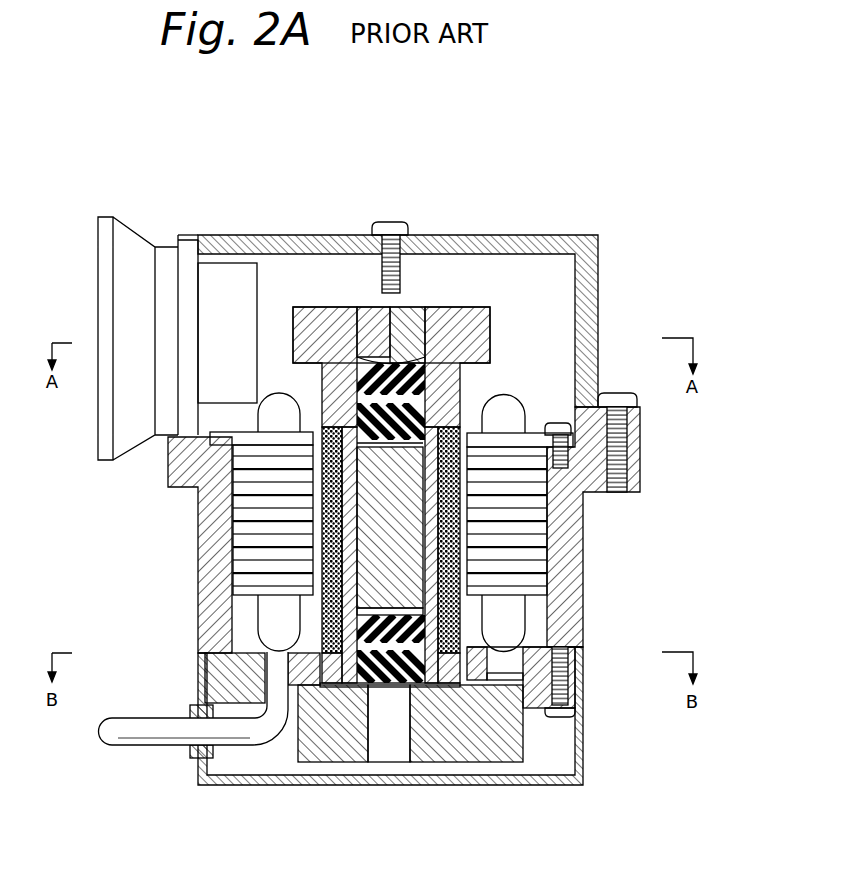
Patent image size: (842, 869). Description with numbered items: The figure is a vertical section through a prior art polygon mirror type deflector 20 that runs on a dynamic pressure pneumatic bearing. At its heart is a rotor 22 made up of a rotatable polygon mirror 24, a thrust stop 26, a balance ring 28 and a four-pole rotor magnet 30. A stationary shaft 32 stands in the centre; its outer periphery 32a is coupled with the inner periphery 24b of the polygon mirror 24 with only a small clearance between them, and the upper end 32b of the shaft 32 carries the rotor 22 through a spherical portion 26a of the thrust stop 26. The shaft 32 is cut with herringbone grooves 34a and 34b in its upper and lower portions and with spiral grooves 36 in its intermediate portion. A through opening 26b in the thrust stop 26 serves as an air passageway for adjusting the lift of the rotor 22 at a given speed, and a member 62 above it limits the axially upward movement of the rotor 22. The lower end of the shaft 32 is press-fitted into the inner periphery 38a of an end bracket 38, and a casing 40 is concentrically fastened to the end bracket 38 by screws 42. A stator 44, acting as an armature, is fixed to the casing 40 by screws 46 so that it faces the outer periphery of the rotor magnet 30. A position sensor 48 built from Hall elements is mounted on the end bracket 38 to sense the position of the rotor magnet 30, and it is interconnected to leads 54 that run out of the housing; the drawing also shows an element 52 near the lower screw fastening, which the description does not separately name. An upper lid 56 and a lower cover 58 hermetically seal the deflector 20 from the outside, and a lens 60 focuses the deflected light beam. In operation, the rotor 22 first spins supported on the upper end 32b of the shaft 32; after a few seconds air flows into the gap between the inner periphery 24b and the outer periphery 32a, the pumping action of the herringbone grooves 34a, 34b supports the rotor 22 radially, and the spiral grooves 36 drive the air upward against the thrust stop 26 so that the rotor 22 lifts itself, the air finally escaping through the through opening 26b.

The deflector 20 is at (361, 473).
The rotor 22 is at (495, 305).
The polygon mirror 24 is at (462, 307).
The inner periphery 24b is at (420, 408).
The thrust stop 26 is at (411, 307).
The spherical portion 26a is at (423, 360).
The through opening 26b is at (381, 307).
The balance ring 28 is at (467, 663).
The rotor magnet 30 is at (547, 620).
The stationary shaft 32 is at (417, 557).
The outer periphery 32a is at (417, 606).
The upper end 32b is at (352, 356).
The herringbone grooves 34a is at (320, 375).
The herringbone grooves 34b is at (385, 665).
The spiral grooves 36 is at (382, 480).
The end bracket 38 is at (343, 748).
The inner periphery 38a is at (393, 742).
The casing 40 is at (570, 585).
The screws 42 is at (567, 697).
The stator 44 is at (277, 497).
The screws 46 is at (560, 457).
The position sensor 48 is at (302, 648).
The nut 52 is at (543, 710).
The leads 54 is at (138, 746).
The upper lid 56 is at (582, 236).
The lower cover 58 is at (548, 786).
The lens 60 is at (131, 243).
The member 62 is at (391, 225).